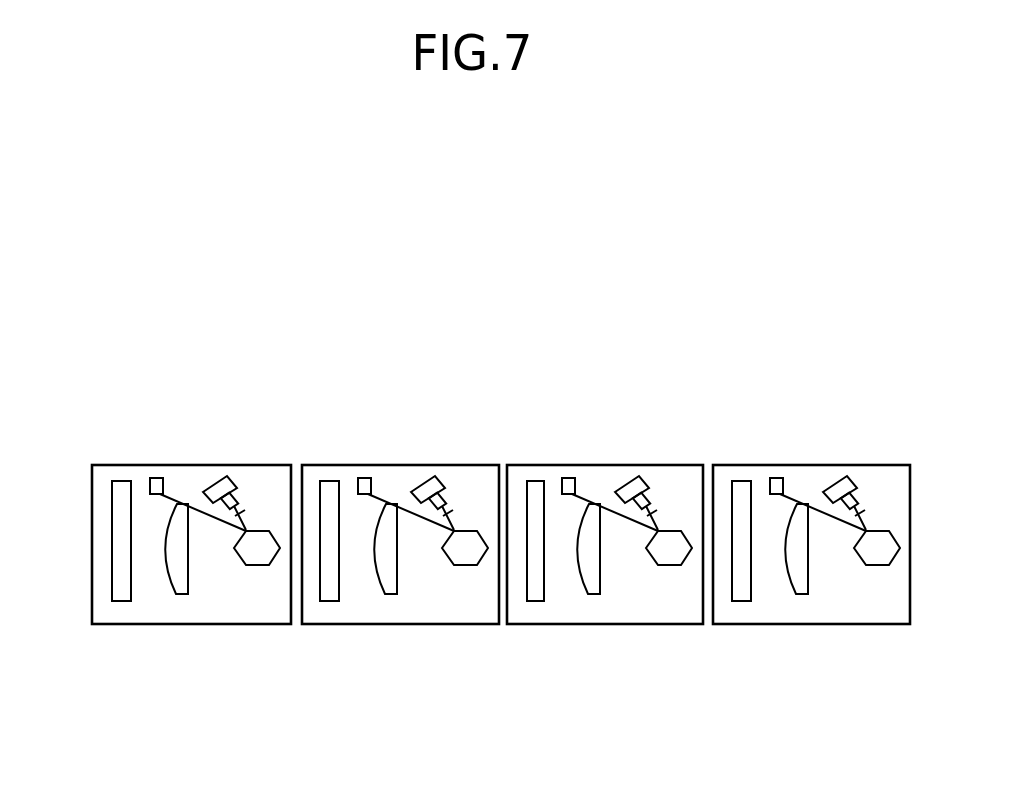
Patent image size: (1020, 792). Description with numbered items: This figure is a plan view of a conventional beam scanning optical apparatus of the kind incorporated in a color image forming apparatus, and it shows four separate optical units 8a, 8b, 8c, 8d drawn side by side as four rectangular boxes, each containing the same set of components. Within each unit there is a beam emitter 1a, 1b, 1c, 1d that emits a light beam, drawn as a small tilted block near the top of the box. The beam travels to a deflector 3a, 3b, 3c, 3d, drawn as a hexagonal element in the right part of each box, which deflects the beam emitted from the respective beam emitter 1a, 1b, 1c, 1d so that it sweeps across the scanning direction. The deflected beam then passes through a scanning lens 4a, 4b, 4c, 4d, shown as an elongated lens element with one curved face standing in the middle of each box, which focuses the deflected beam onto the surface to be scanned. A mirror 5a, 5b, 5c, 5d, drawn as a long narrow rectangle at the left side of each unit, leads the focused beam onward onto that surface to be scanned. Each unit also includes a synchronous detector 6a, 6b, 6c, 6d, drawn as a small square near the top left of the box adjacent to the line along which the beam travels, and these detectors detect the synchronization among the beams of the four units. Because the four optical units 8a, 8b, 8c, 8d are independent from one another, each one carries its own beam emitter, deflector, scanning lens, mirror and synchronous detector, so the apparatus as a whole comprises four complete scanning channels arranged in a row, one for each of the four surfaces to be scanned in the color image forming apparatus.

The beam emitter 1a is at (222, 448).
The beam emitter 1b is at (431, 448).
The beam emitter 1c is at (636, 448).
The beam emitter 1d is at (839, 448).
The deflector 3a is at (257, 484).
The deflector 3b is at (465, 485).
The deflector 3c is at (669, 484).
The deflector 3d is at (877, 484).
The scanning lens 4a is at (182, 603).
The scanning lens 4b is at (393, 601).
The scanning lens 4c is at (594, 601).
The scanning lens 4d is at (801, 605).
The mirror 5a is at (103, 592).
The mirror 5b is at (311, 592).
The mirror 5c is at (514, 592).
The mirror 5d is at (720, 592).
The synchronous detector 6a is at (154, 429).
The synchronous detector 6b is at (360, 428).
The synchronous detector 6c is at (567, 428).
The synchronous detector 6d is at (775, 428).
The optical unit 8a is at (191, 595).
The optical unit 8b is at (400, 595).
The optical unit 8c is at (605, 594).
The optical unit 8d is at (811, 598).